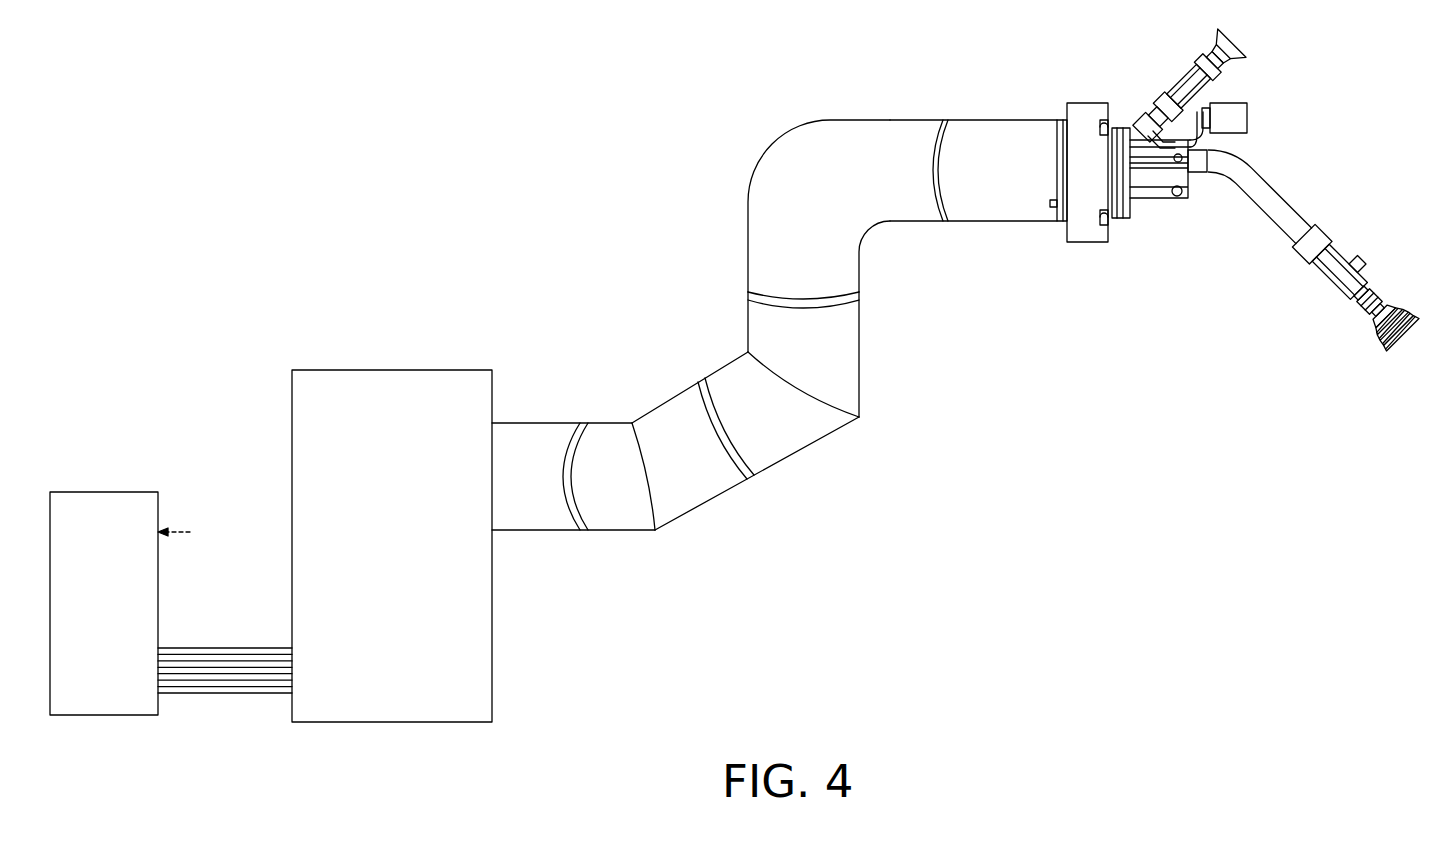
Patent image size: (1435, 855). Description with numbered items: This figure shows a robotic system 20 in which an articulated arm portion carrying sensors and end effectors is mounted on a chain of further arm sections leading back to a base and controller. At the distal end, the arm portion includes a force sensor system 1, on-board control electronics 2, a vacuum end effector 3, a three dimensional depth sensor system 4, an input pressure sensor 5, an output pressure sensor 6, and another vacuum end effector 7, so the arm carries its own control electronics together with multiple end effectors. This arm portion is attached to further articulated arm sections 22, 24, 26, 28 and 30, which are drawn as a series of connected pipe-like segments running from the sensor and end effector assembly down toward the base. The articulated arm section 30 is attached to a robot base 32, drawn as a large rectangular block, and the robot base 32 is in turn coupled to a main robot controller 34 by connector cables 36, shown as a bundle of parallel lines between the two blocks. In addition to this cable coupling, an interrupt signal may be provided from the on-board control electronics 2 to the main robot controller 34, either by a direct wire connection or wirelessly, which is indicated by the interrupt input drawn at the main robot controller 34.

The robotic system 20 is at (610, 85).
The articulated arm section 22 is at (1005, 118).
The articulated arm section 24 is at (855, 118).
The articulated arm section 26 is at (860, 386).
The articulated arm section 28 is at (698, 510).
The articulated arm section 30 is at (531, 420).
The robot base 32 is at (390, 368).
The main robot controller 34 is at (98, 490).
The connector cables 36 is at (224, 647).
The force sensor system 1 is at (1088, 242).
The on-board control electronics 2 is at (1122, 218).
The vacuum end effector 3 is at (1210, 60).
The three dimensional depth sensor system 4 is at (1250, 118).
The input pressure sensor 5 is at (1327, 240).
The output pressure sensor 6 is at (1368, 293).
The vacuum end effector 7 is at (1403, 322).